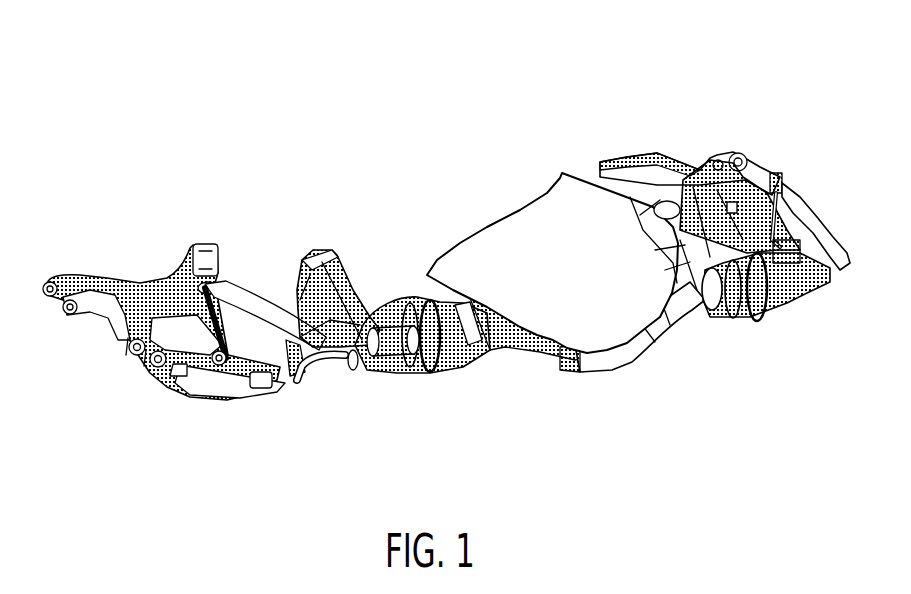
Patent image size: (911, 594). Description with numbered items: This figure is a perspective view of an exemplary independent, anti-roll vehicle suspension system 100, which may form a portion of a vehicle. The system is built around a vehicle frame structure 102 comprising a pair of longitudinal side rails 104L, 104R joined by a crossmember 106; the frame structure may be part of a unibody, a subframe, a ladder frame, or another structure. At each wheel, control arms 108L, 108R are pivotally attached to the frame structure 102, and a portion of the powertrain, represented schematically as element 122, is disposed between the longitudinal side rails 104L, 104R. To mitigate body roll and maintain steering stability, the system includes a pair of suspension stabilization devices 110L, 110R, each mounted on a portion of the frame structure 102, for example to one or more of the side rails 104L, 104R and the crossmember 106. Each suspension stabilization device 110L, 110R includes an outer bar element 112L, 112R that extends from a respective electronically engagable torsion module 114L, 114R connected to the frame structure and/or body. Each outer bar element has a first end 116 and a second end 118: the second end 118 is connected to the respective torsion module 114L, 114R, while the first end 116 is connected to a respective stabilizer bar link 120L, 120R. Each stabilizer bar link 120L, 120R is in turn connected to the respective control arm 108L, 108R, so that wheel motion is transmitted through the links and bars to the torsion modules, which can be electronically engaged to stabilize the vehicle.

The vehicle suspension system 100 is at (215, 80).
The vehicle frame structure 102 is at (427, 208).
The longitudinal side rail 104L is at (305, 283).
The longitudinal side rail 104R is at (696, 200).
The crossmember 106 is at (589, 365).
The control arm 108L is at (141, 297).
The control arm 108R is at (726, 162).
The suspension stabilization device 110L is at (386, 376).
The suspension stabilization device 110R is at (766, 316).
The outer bar element 112L is at (294, 378).
The outer bar element 112R is at (838, 260).
The electronically engagable torsion module 114L is at (424, 368).
The electronically engagable torsion module 114R is at (741, 306).
The first end 116 is at (217, 283).
The second end 118 is at (342, 365).
The stabilizer bar link 120L is at (213, 365).
The stabilizer bar link 120R is at (787, 186).
The powertrain portion 122 is at (586, 262).